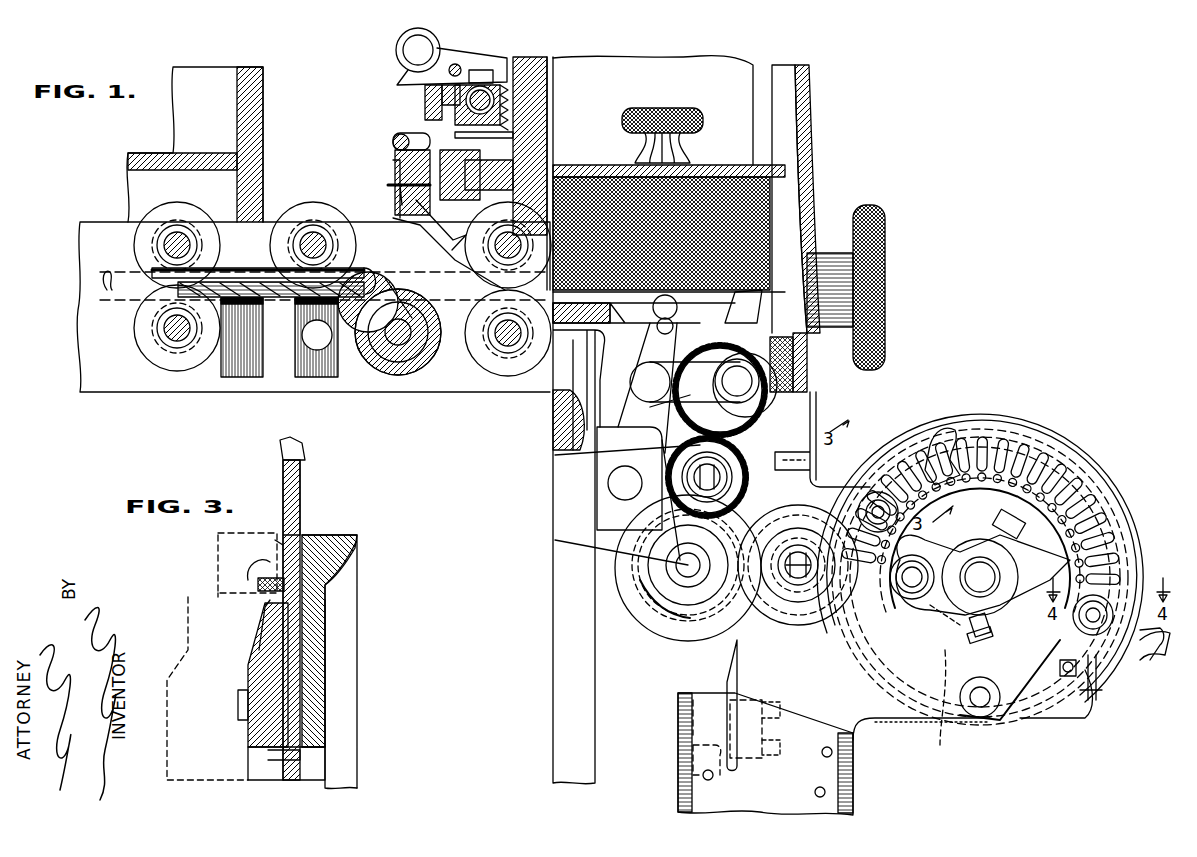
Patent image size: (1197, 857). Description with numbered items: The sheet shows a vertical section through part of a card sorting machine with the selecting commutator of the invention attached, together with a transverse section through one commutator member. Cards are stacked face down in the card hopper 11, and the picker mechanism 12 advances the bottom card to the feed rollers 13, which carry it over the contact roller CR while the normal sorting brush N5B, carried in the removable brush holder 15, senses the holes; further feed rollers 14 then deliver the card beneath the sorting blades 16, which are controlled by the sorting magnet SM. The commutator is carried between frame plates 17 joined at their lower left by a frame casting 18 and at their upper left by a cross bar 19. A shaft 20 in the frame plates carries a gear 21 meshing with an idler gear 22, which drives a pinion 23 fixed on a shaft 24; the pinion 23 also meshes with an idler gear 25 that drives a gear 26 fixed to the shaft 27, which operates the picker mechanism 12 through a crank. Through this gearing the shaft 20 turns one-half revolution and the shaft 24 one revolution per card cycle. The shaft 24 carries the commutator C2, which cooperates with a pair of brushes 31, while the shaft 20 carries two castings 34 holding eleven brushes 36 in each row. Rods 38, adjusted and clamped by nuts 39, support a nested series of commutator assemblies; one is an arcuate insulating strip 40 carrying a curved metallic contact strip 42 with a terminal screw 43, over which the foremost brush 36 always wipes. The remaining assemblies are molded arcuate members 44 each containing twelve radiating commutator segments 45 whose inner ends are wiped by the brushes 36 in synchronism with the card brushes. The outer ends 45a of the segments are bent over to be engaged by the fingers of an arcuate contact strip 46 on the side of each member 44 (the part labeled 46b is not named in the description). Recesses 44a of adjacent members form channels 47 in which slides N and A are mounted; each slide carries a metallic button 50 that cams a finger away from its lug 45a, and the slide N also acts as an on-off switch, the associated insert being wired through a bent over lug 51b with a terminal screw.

In FIG. 1, the card hopper 11 is at (745, 205).
In FIG. 1, the picker mechanism 12 is at (780, 298).
In FIG. 1, the feed rollers 13 is at (497, 215).
In FIG. 1, the feed rollers 14 is at (312, 213).
In FIG. 1, the brush holder 15 is at (415, 225).
In FIG. 1, the sorting blades 16 is at (242, 283).
In FIG. 1, the frame plates 17 is at (898, 700).
In FIG. 1, the frame casting 18 is at (722, 773).
In FIG. 1, the cross bar 19 is at (830, 430).
In FIG. 1, the shaft 20 is at (985, 585).
In FIG. 1, the gear 21 is at (936, 709).
In FIG. 1, the idler gear 22 is at (813, 627).
In FIG. 1, the pinion 23 is at (688, 609).
In FIG. 1, the shaft 24 is at (688, 565).
In FIG. 1, the idler gear 25 is at (690, 447).
In FIG. 1, the gear 26 is at (695, 410).
In FIG. 1, the shaft 27 is at (660, 403).
In FIG. 1, the pair of brushes 31 is at (735, 655).
In FIG. 1, the castings 34 is at (945, 640).
In FIG. 1, the brushes 36 is at (1050, 535).
In FIG. 1, the rods 38 is at (882, 495).
In FIG. 1, the nuts 39 is at (880, 510).
In FIG. 1, the arcuate strip 40 is at (1035, 450).
In FIG. 1, the contact strip 42 is at (975, 492).
In FIG. 1, the terminal screw 43 is at (1092, 700).
In FIG. 1, the arcuate member 44 is at (1017, 425).
In FIG. 3, the arcuate member 44 is at (350, 520).
In FIG. 3, the recesses 44a is at (335, 590).
In FIG. 3, the commutator segments 45 is at (283, 740).
In FIG. 3, the outer ends 45a is at (268, 612).
In FIG. 3, the contact strip 46 is at (245, 685).
In FIG. 3, the key tip 46b is at (258, 585).
In FIG. 3, the channels 47 is at (275, 545).
In FIG. 3, the metallic button 50 is at (272, 565).
In FIG. 1, the bent over lug 51b is at (1068, 676).
In FIG. 1, the slide A is at (955, 433).
In FIG. 3, the slide A is at (303, 463).
In FIG. 1, the slide N is at (1149, 647).
In FIG. 1, the commutator C2 is at (628, 615).
In FIG. 1, the contact roller CR is at (395, 378).
In FIG. 1, the sorting magnet SM is at (316, 360).
In FIG. 1, the normal sorting brush N5B is at (388, 283).